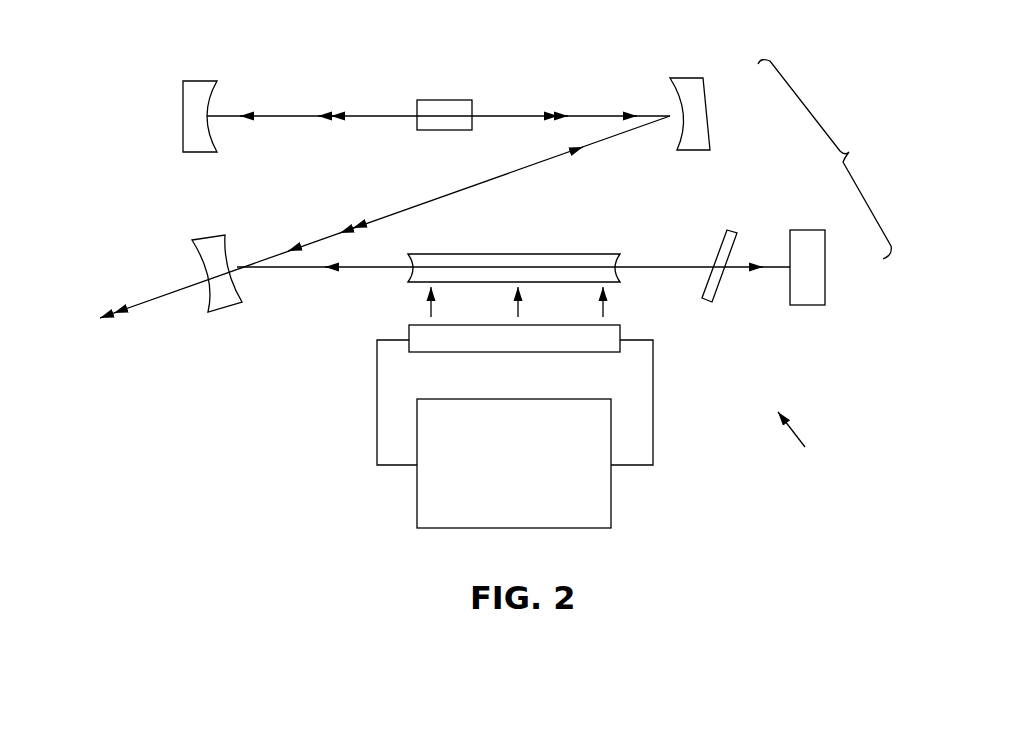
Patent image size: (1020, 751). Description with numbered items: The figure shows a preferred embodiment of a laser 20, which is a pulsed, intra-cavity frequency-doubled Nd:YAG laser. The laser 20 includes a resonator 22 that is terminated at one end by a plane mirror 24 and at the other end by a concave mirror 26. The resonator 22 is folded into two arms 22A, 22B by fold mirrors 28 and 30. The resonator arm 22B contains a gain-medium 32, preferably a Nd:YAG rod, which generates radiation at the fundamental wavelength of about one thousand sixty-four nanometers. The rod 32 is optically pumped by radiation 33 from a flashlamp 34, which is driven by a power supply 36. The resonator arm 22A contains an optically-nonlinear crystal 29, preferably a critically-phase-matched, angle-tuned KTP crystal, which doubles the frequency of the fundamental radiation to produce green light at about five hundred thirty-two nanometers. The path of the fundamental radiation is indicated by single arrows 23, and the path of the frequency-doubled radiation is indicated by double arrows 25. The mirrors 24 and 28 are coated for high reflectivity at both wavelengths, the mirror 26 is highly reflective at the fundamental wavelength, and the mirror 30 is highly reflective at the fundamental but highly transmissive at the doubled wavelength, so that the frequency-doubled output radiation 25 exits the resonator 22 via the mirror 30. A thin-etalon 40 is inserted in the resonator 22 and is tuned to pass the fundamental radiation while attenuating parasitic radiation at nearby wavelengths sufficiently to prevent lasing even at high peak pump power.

The laser 20 is at (810, 442).
The resonator 22 is at (825, 159).
The resonator arm 22A is at (405, 161).
The resonator arm 22B is at (683, 249).
The single arrows 23 is at (243, 110).
The plane mirror 24 is at (812, 303).
The double arrows 25 is at (333, 112).
The concave mirror 26 is at (183, 99).
The fold mirror 28 is at (683, 81).
The optically-nonlinear crystal 29 is at (450, 100).
The fold mirror 30 is at (223, 302).
The gain-medium 32 is at (555, 257).
The radiation 33 is at (428, 305).
The flashlamp 34 is at (597, 345).
The power supply 36 is at (528, 482).
The thin-etalon 40 is at (731, 230).